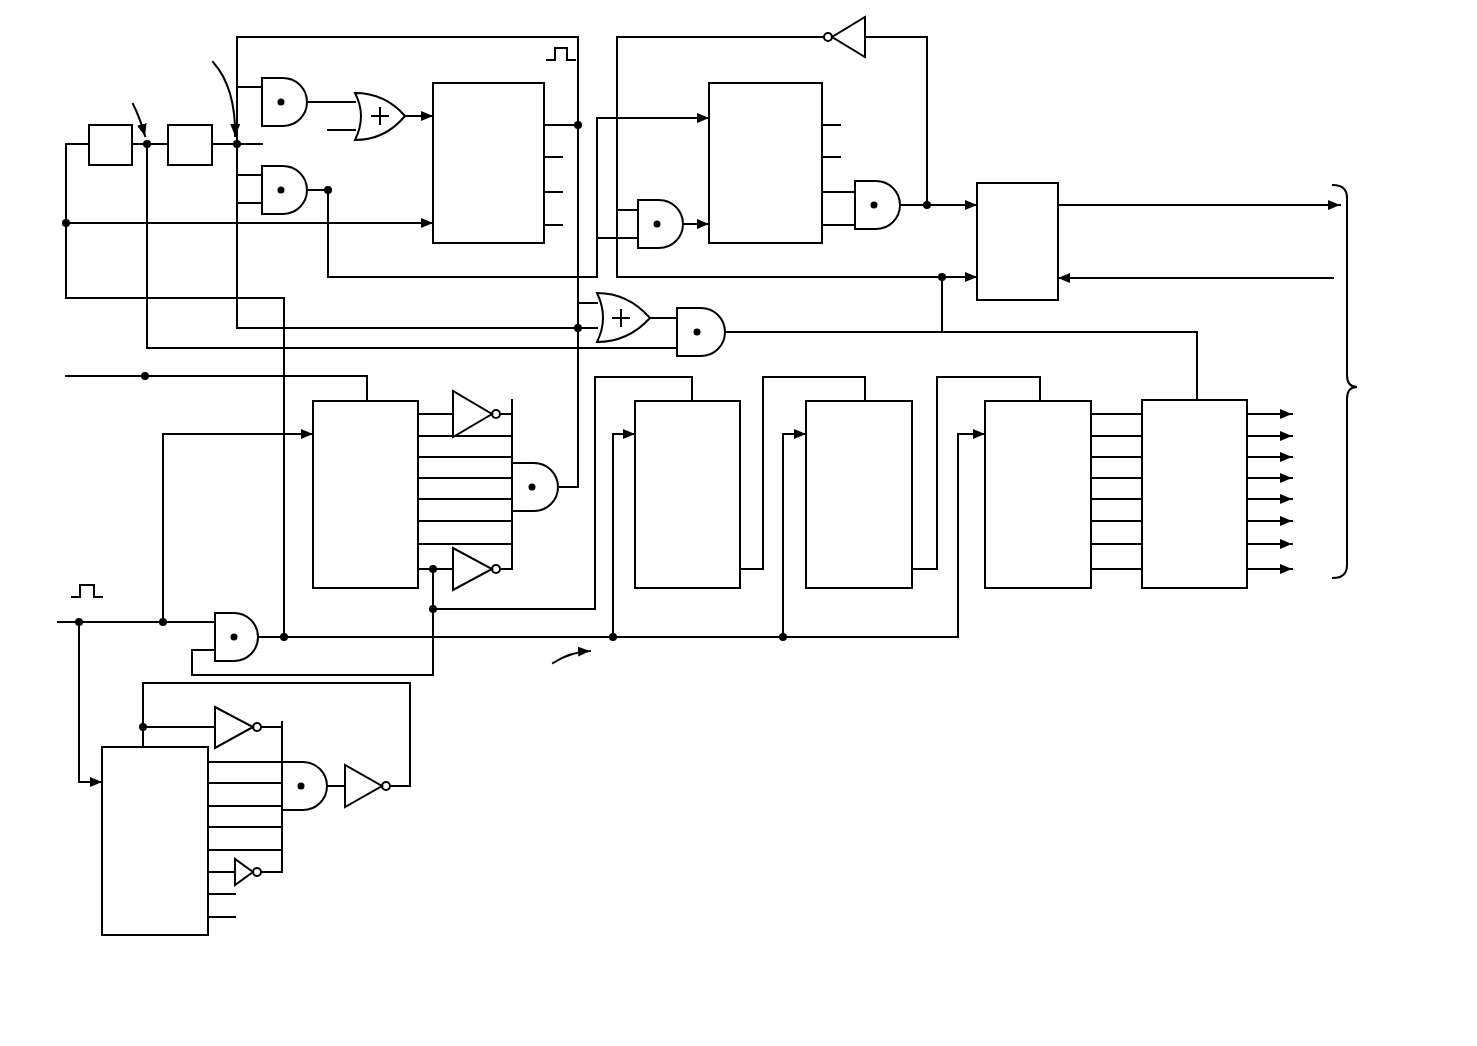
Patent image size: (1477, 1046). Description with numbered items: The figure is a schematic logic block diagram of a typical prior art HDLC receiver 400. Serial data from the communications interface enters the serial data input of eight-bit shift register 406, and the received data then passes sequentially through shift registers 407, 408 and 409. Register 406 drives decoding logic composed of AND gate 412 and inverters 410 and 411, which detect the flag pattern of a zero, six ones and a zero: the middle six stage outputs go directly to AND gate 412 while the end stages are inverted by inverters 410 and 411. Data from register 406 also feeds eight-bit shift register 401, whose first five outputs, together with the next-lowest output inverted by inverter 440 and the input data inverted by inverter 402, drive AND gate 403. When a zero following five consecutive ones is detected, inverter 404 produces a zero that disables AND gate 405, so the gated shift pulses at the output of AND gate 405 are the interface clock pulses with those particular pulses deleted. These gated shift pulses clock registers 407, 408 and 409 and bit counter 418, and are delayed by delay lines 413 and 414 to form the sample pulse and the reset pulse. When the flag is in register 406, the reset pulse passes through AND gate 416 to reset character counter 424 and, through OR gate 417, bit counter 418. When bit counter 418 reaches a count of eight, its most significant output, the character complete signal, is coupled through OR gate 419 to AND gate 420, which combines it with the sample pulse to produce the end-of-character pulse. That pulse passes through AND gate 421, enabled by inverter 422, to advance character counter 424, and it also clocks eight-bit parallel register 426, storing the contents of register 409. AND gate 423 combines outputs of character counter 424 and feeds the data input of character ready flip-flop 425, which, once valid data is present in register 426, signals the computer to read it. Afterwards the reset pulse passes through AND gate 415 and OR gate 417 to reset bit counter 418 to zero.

The prior art receiver circuit 400 is at (758, 474).
The 8-bit shift register 401 is at (112, 752).
The inverter 402 is at (215, 713).
The AND gate 403 is at (297, 768).
The inverter 404 is at (358, 768).
The AND gate 405 is at (225, 614).
The 8-bit shift register 406 is at (325, 587).
The 8-bit shift register 407 is at (650, 580).
The 8-bit shift register 408 is at (818, 580).
The 8-bit shift register 409 is at (1036, 580).
The inverter 410 is at (468, 390).
The inverter 411 is at (470, 581).
The AND gate 412 is at (522, 463).
The delay line 413 is at (110, 165).
The delay line 414 is at (183, 165).
The AND gate 415 is at (278, 84).
The AND gate 416 is at (279, 171).
The OR gate 417 is at (358, 98).
The bit counter 418 is at (431, 174).
The OR gate 419 is at (634, 305).
The AND gate 420 is at (718, 319).
The AND gate 421 is at (648, 201).
The inverter 422 is at (821, 33).
The AND gate 423 is at (868, 186).
The character counter 424 is at (715, 126).
The character ready flip-flop 425 is at (989, 188).
The 8-bit parallel register 426 is at (1190, 580).
The inverter 440 is at (262, 882).